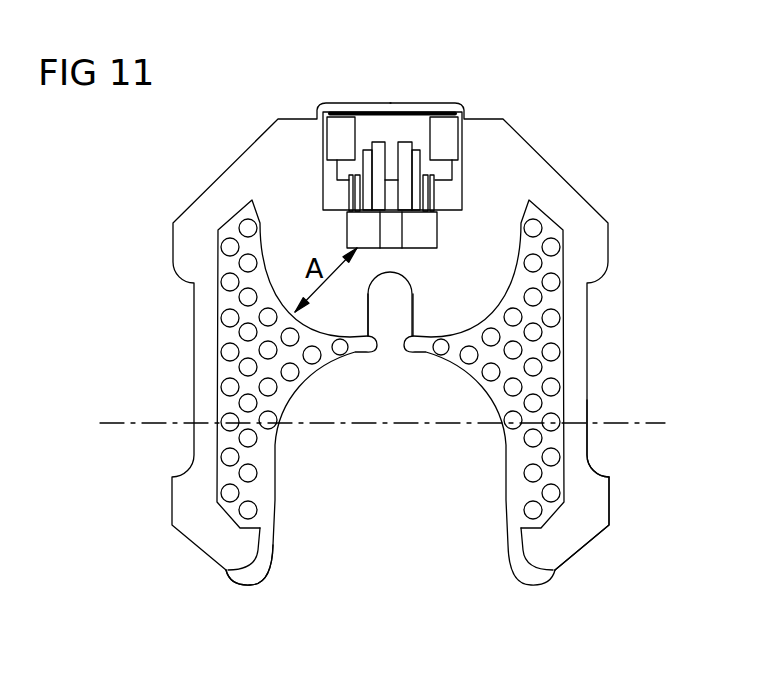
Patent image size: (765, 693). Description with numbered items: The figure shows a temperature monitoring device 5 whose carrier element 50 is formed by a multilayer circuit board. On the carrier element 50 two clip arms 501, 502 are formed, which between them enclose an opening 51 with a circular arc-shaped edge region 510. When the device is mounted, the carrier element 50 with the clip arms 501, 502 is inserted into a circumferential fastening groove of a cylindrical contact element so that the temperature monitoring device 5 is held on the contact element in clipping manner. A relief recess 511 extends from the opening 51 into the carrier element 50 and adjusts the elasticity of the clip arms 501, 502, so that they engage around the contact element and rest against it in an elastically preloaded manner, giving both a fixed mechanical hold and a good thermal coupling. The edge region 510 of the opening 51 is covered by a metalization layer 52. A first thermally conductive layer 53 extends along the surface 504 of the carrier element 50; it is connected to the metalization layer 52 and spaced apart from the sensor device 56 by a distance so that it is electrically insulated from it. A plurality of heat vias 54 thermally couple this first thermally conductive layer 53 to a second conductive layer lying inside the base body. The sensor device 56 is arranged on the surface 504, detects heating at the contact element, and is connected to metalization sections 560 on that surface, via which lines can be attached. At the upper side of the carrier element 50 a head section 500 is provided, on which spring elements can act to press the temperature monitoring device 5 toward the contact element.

The temperature monitoring device 5 is at (573, 150).
The carrier element 50 is at (582, 225).
The opening 51 is at (482, 558).
The metalization layer 52 is at (256, 580).
The first thermally conductive layer 53 is at (227, 517).
The heat vias 54 is at (224, 425).
The sensor device 56 is at (390, 227).
The head section 500 is at (428, 104).
The clip arm 501 is at (592, 522).
The clip arm 502 is at (225, 562).
The surface 504 is at (593, 493).
The edge region 510 is at (280, 510).
The relief recess 511 is at (392, 327).
The metalization sections 560 is at (378, 157).